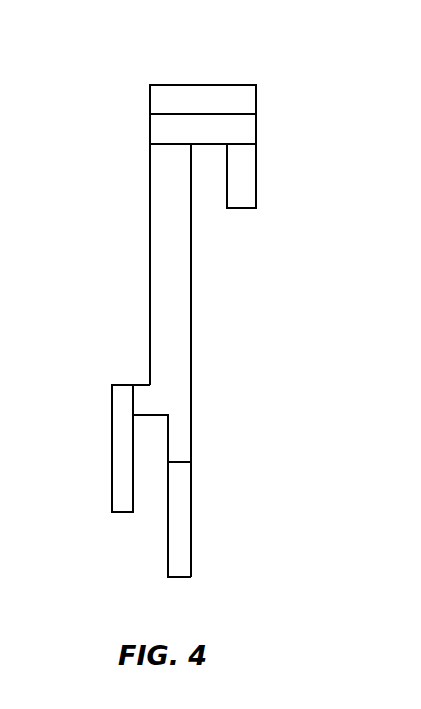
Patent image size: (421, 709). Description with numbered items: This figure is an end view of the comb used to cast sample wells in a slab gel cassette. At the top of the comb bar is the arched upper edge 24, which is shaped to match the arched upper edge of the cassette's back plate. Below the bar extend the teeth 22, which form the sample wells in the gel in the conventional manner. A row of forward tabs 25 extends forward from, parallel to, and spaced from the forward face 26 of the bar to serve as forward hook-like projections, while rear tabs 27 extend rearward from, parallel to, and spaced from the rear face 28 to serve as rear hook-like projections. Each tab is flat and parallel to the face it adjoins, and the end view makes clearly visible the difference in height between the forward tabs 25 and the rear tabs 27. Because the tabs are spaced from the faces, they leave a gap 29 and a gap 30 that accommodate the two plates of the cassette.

The teeth 22 is at (191, 537).
The arched upper edge 24 is at (210, 85).
The forward tabs 25 is at (112, 460).
The forward face 26 is at (148, 305).
The rear tabs 27 is at (256, 172).
The rear face 28 is at (191, 378).
The gap 29 is at (152, 512).
The gap 30 is at (211, 210).